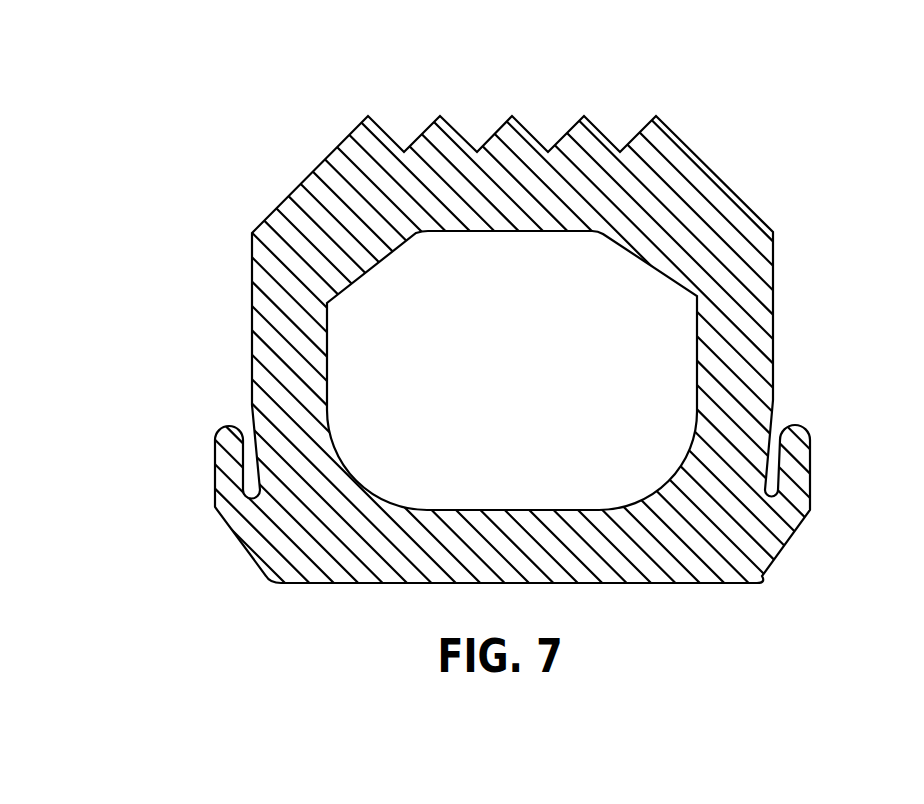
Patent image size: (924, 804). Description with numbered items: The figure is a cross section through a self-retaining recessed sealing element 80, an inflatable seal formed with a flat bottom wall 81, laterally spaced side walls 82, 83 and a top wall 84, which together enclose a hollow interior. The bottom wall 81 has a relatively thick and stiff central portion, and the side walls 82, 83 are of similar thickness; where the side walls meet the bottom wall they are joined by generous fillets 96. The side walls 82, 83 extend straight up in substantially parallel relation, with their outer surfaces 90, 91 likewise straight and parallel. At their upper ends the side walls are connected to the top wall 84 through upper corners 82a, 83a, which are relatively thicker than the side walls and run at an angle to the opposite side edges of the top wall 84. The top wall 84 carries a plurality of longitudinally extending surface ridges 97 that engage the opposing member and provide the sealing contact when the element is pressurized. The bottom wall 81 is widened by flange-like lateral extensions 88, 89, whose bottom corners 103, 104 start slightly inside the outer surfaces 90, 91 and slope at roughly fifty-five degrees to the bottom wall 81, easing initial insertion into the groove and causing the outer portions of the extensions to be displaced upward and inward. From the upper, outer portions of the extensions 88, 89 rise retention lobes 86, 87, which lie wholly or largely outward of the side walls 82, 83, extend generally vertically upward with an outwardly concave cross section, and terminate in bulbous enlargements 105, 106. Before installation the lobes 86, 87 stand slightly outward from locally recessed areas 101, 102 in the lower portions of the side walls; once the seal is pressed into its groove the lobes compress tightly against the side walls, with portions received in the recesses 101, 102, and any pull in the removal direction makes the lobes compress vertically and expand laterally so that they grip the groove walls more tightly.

The sealing element 80 is at (478, 317).
The bottom wall 81 is at (535, 525).
The side wall 82 is at (773, 338).
The upper corner 82a is at (668, 233).
The side wall 83 is at (257, 340).
The upper corner 83a is at (366, 228).
The top wall 84 is at (499, 180).
The retention lobe 86 is at (808, 443).
The retention lobe 87 is at (215, 443).
The lateral extension 88 is at (777, 527).
The lateral extension 89 is at (262, 540).
The outer surface 90 is at (773, 293).
The outer surface 91 is at (252, 270).
The fillet 96 is at (335, 495).
The surface ridge 97 is at (588, 132).
The recessed area 101 is at (808, 475).
The recessed area 102 is at (257, 471).
The bottom corner 103 is at (787, 565).
The bottom corner 104 is at (247, 560).
The bulbous enlargement 105 is at (807, 420).
The bulbous enlargement 106 is at (230, 423).